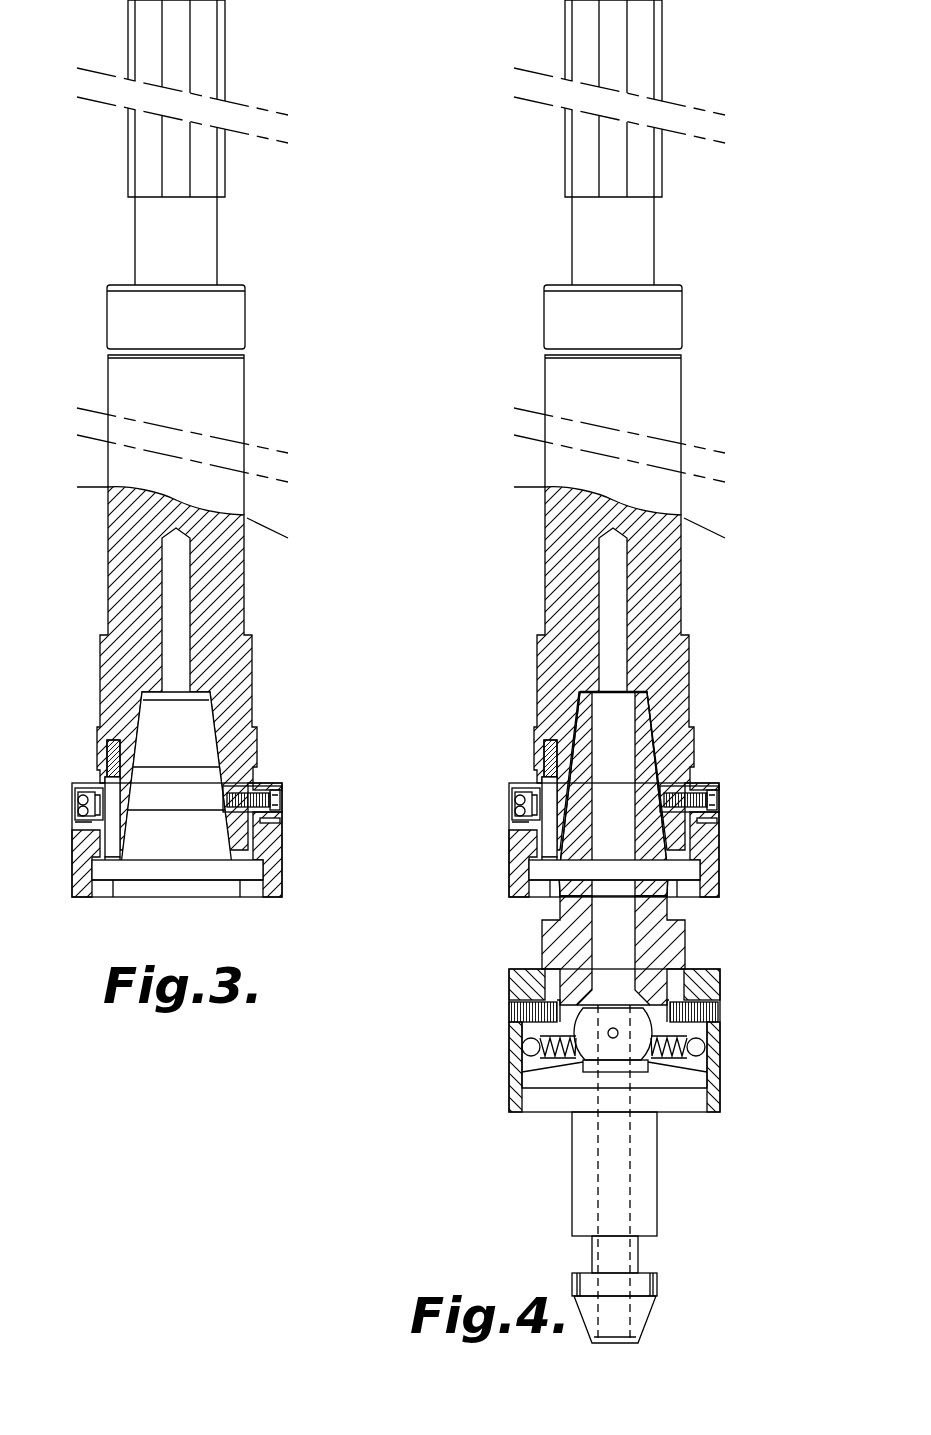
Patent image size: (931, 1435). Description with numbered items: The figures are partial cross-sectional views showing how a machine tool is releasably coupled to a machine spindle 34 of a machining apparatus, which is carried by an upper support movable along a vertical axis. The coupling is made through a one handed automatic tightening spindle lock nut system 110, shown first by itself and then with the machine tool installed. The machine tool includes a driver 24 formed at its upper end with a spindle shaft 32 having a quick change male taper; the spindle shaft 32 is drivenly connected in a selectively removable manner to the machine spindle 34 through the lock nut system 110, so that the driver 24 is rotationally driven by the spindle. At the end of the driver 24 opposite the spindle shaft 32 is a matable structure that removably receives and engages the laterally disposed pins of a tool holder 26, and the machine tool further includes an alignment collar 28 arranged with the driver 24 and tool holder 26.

In FIG. 3, the machine spindle 34 is at (245, 572).
In FIG. 4, the machine spindle 34 is at (682, 572).
In FIG. 4, the spindle shaft 32 is at (687, 713).
In FIG. 3, the spindle lock nut system 110 is at (305, 828).
In FIG. 4, the spindle lock nut system 110 is at (739, 831).
In FIG. 4, the driver 24 is at (694, 949).
In FIG. 4, the alignment collar 28 is at (725, 1065).
In FIG. 4, the tool holder 26 is at (682, 1213).